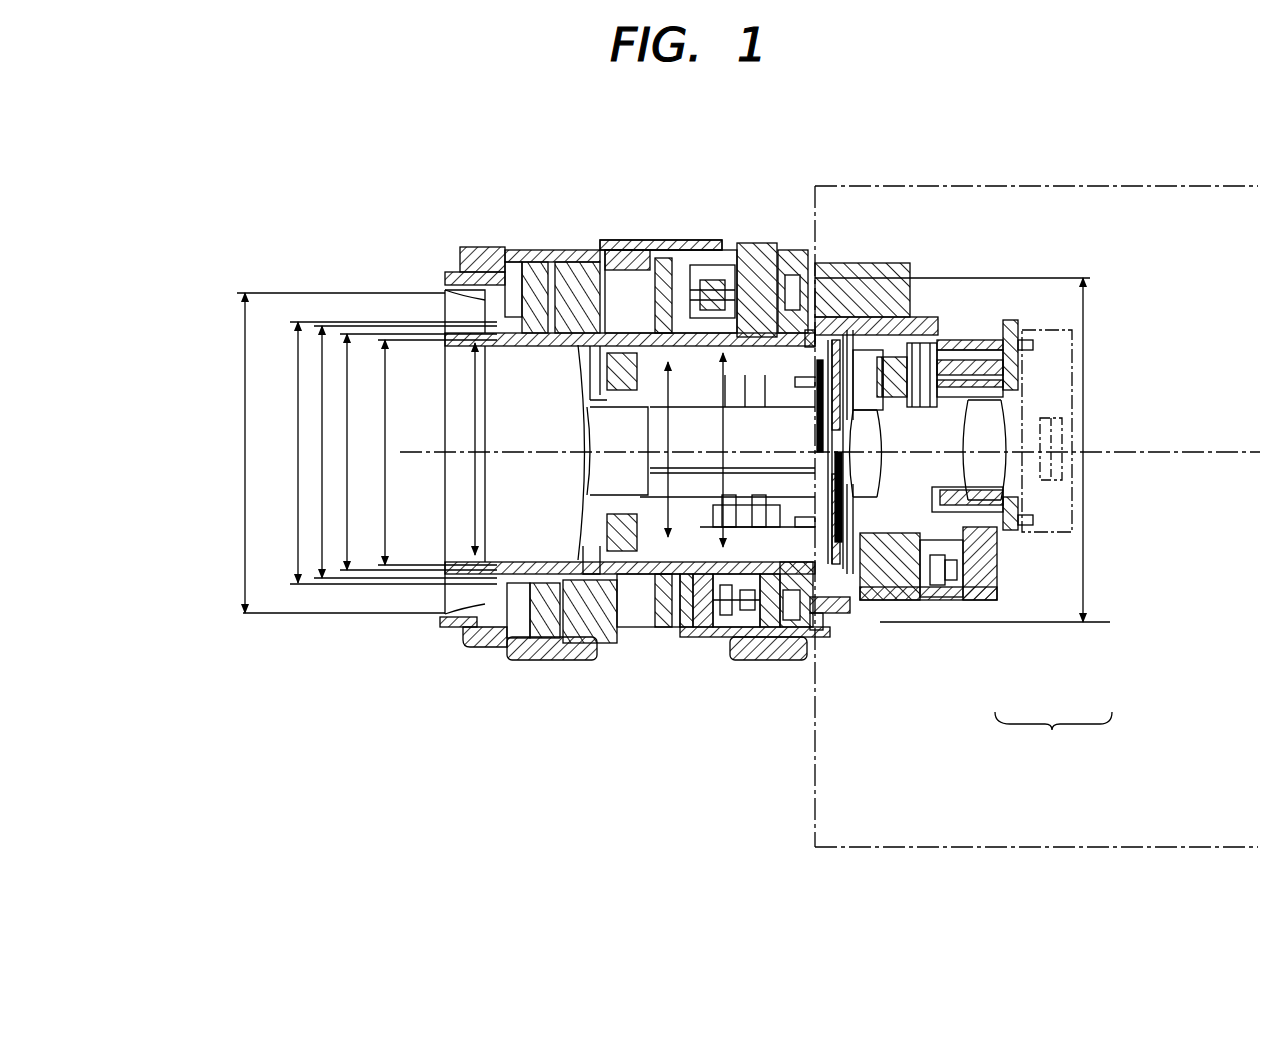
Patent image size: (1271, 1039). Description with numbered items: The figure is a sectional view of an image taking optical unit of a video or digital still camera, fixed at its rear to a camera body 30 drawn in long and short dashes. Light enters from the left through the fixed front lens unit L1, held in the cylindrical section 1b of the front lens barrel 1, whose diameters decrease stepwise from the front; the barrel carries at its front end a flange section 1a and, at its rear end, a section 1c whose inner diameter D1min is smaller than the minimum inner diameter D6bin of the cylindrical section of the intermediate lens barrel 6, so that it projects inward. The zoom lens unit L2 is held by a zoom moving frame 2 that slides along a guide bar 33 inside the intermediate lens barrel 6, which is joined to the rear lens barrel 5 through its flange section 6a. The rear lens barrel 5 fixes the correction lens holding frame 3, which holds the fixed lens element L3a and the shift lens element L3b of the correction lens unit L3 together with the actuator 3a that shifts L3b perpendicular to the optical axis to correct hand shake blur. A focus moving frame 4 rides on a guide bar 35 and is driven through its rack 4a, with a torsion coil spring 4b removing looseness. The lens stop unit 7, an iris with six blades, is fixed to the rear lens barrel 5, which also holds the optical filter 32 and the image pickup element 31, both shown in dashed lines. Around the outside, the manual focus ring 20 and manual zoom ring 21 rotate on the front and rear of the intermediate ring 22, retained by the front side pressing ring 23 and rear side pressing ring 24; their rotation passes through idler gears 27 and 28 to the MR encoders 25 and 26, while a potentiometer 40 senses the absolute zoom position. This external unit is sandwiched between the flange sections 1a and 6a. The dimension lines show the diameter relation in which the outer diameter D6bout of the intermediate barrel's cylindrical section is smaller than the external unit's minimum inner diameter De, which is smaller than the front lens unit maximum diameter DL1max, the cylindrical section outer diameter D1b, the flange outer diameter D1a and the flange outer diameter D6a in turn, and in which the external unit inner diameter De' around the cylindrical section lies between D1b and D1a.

The front lens barrel 1 is at (447, 318).
The flange section 1a is at (470, 300).
The cylindrical section 1b is at (548, 262).
The section 1c is at (587, 354).
The zoom moving frame 2 is at (610, 252).
The correction lens holding frame 3 is at (898, 300).
The actuator 3a is at (925, 598).
The focus moving frame 4 is at (985, 370).
The rack 4a is at (767, 660).
The torsion coil spring 4b is at (790, 660).
The rear lens barrel 5 is at (1015, 325).
The intermediate lens barrel 6 is at (862, 355).
The flange section 6a is at (838, 345).
The lens stop unit 7 is at (895, 350).
The manual focus ring 20 is at (520, 252).
The manual zoom ring 21 is at (694, 252).
The intermediate ring 22 is at (642, 250).
The front side pressing ring 23 is at (472, 252).
The rear side pressing ring 24 is at (820, 265).
The MR encoder 25 is at (548, 660).
The MR encoder 26 is at (686, 630).
The idler gear 27 is at (497, 657).
The idler gear 28 is at (745, 660).
The camera body 30 is at (1072, 850).
The image pickup element 31 is at (1060, 468).
The optical filter 32 is at (1058, 505).
The guide bar 33 is at (700, 620).
The guide bar 35 is at (950, 350).
The potentiometer 40 is at (660, 242).
The front lens unit L1 is at (497, 530).
The zoom lens unit L2 is at (612, 478).
The correction lens unit L3 is at (1053, 736).
The fixed lens element L3a is at (905, 520).
The shift lens element L3b is at (985, 520).
The outer diameter of flange section D1a is at (247, 352).
The inner diameter of external unit around cylindrical section De' is at (334, 453).
The outer diameter of cylindrical section D1b is at (322, 455).
The maximum outer diameter of front lens unit DL1max is at (347, 487).
The minimum inner diameter of external unit De is at (437, 452).
The outer diameter of cylindrical section of intermediate lens barrel D6bout is at (480, 488).
The inner diameter of section 1c D1min is at (670, 392).
The minimum inner diameter of cylindrical section of intermediate lens barrel D6bin is at (725, 392).
The outer diameter of flange section of intermediate lens barrel D6a is at (1083, 425).